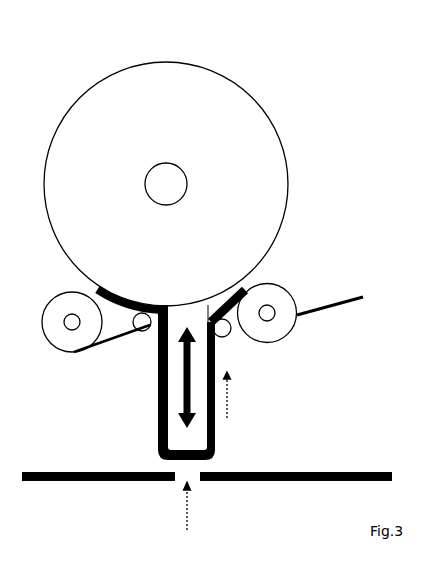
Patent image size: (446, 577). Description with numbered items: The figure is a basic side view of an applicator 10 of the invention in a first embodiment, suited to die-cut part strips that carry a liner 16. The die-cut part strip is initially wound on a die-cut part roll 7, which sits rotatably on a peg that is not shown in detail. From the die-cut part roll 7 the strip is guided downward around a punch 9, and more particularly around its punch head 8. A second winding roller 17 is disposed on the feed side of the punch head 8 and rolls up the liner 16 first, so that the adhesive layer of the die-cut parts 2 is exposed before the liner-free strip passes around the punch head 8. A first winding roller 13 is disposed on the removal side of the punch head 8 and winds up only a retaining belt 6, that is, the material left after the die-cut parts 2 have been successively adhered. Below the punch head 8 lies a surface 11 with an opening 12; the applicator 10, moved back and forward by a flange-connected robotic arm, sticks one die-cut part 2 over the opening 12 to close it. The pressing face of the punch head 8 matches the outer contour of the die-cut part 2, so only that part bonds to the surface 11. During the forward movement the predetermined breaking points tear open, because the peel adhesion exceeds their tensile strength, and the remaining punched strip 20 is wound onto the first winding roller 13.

The die-cut part 2 is at (170, 459).
The retaining belt 6 is at (336, 302).
The die-cut part roll 7 is at (258, 145).
The punch head 8 is at (195, 443).
The punch 9 is at (198, 362).
The applicator 10 is at (303, 180).
The surface 11 is at (320, 470).
The opening 12 is at (187, 516).
The first winding roller 13 is at (282, 303).
The liner 16 is at (118, 345).
The second winding roller 17 is at (58, 310).
The punched strip 20 is at (215, 429).